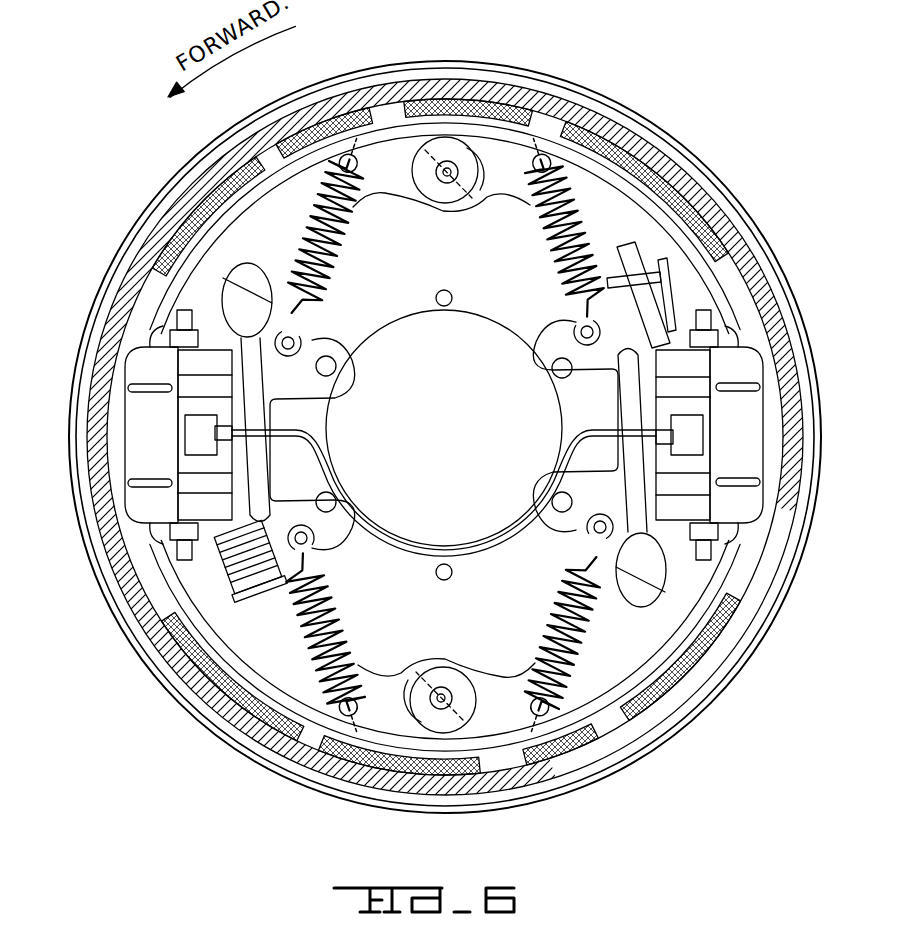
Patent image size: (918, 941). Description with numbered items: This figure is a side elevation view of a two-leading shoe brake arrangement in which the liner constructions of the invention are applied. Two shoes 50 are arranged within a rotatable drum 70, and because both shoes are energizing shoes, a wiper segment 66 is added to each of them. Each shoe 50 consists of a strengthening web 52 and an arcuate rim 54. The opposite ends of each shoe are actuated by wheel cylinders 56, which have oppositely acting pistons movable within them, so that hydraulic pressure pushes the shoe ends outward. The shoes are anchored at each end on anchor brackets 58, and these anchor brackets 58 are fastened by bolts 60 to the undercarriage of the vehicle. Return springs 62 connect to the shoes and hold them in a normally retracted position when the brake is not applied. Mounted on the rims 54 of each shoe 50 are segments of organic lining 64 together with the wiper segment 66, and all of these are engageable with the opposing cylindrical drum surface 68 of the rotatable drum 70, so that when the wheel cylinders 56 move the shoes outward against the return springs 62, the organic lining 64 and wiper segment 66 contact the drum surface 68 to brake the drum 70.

The shoe 50 is at (392, 140).
The strengthening web 52 is at (409, 190).
The arcuate rim 54 is at (276, 152).
The wheel cylinder 56 is at (193, 362).
The anchor bracket 58 is at (325, 413).
The bolt 60 is at (333, 367).
The return spring 62 is at (340, 287).
The organic lining 64 is at (222, 190).
The wiper segment 66 is at (365, 103).
The cylindrical drum surface 68 is at (632, 240).
The rotatable drum 70 is at (673, 710).